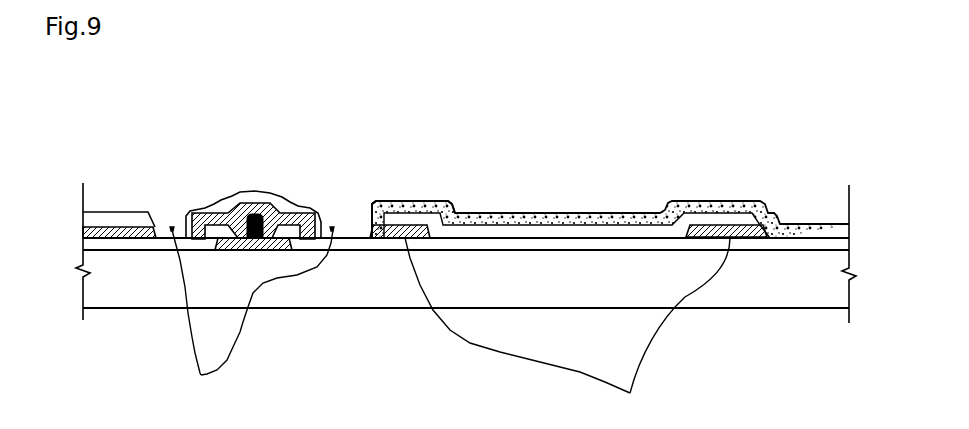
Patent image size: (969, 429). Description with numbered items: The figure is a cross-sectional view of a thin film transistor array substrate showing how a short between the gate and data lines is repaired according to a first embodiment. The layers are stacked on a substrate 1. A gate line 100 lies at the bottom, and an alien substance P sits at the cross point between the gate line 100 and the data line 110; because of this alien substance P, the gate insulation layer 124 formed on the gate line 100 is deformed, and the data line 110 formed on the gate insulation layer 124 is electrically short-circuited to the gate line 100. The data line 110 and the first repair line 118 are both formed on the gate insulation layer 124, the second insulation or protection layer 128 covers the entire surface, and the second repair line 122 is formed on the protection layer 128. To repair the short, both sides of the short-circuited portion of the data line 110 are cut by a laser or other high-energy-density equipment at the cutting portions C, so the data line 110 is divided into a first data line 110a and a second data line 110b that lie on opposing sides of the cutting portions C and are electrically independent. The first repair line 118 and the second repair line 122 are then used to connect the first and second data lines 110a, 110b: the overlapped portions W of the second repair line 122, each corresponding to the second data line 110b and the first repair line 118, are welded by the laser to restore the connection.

The substrate 1 is at (476, 288).
The gate line 100 is at (370, 134).
The alien substance P is at (257, 207).
The data line 110 is at (278, 251).
The first data line 110a is at (148, 212).
The second data line 110b is at (378, 203).
The first repair line 118 is at (732, 236).
The second repair line 122 is at (540, 213).
The gate insulation layer 124 is at (632, 248).
The second insulation or protection layer 128 is at (440, 201).
The cutting portions C is at (252, 313).
The overlapped portions W is at (567, 329).